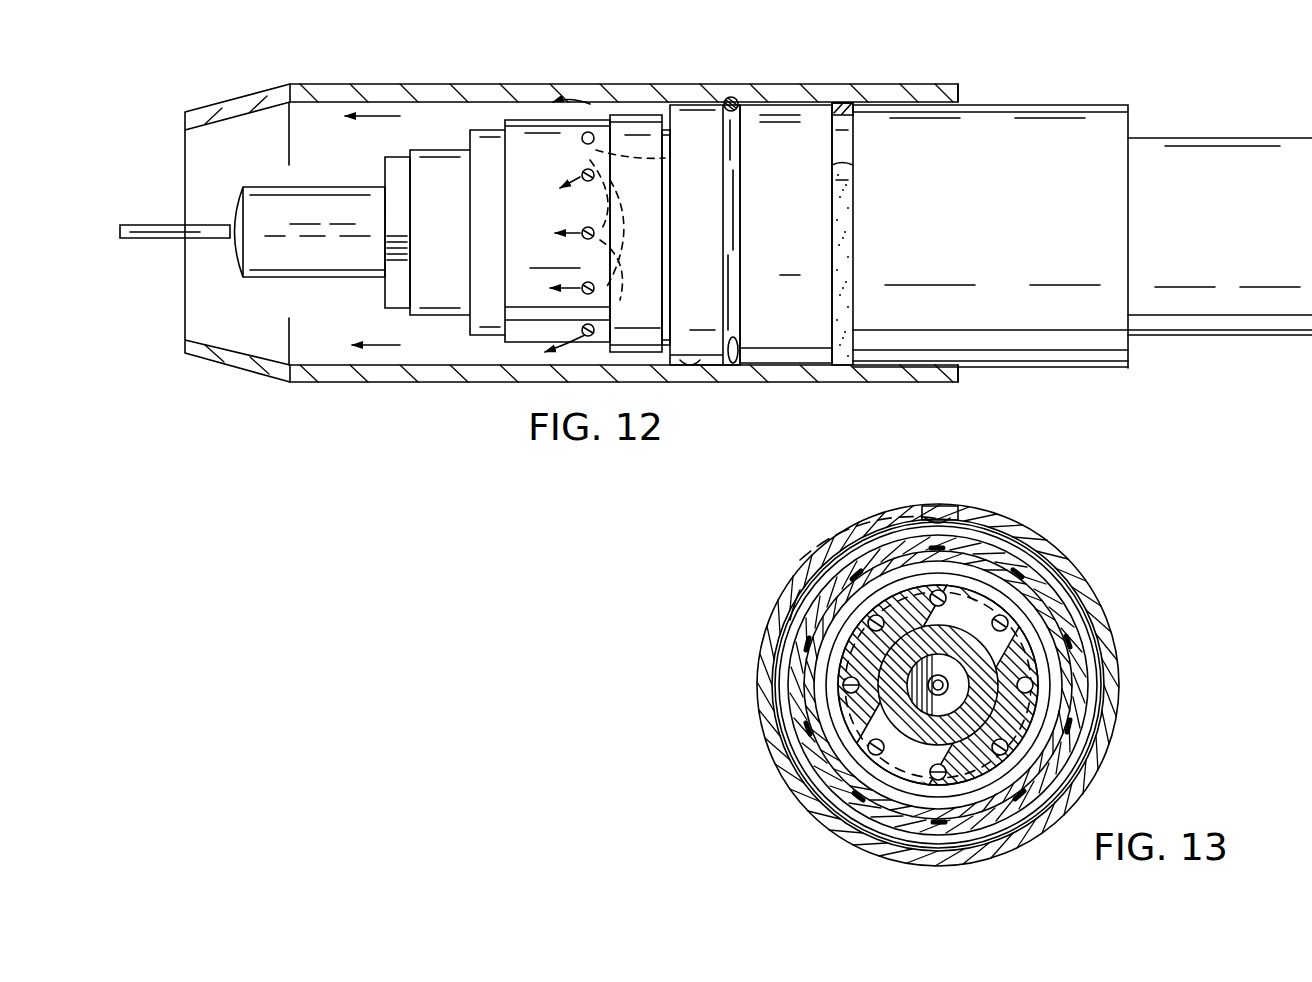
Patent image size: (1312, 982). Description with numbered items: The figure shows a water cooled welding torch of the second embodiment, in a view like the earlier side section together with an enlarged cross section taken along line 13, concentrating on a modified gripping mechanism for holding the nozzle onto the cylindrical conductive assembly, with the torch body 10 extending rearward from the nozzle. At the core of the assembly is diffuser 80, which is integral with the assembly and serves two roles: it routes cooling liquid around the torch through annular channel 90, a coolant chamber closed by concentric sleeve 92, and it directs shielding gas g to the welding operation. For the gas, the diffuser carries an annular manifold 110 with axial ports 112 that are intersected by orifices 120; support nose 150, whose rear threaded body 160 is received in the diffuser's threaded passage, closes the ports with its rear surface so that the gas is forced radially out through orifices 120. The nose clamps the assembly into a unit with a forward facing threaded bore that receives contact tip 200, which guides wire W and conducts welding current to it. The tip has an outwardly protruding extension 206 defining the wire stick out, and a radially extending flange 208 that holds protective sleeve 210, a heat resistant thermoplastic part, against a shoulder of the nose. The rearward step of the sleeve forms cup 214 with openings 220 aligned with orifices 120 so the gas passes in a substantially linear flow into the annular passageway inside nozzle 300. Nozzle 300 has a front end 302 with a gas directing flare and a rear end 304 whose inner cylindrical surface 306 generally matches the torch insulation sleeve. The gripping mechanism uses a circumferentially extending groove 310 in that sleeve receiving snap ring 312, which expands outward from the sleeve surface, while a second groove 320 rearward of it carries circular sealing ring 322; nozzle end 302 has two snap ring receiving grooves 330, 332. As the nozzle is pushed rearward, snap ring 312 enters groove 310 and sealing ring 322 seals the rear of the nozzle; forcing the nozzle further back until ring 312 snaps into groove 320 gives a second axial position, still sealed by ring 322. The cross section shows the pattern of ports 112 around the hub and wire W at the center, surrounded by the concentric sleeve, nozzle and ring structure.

In FIG. 12, the supply tube 10 is at (1252, 136).
In FIG. 13, the diffuser 80 is at (985, 600).
In FIG. 13, the annular channel 90 is at (1050, 730).
In FIG. 13, the concentric sleeve 92 is at (1062, 705).
In FIG. 13, the annular manifold 110 is at (860, 652).
In FIG. 13, the axial ports 112 is at (848, 688).
In FIG. 12, the orifices 120 is at (660, 158).
In FIG. 13, the support nose 150 is at (878, 700).
In FIG. 13, the rear threaded body 160 is at (905, 615).
In FIG. 12, the contact tip 200 is at (283, 282).
In FIG. 12, the extension 206 is at (318, 280).
In FIG. 12, the radially extending flange 208 is at (398, 163).
In FIG. 12, the protective sleeve 210 is at (500, 348).
In FIG. 12, the cup 214 is at (637, 113).
In FIG. 12, the openings 220 is at (590, 133).
In FIG. 12, the nozzle 300 is at (506, 88).
In FIG. 13, the nozzle 300 is at (1112, 645).
In FIG. 12, the front end 302 is at (218, 367).
In FIG. 12, the rear end 304 is at (958, 87).
In FIG. 12, the inner cylindrical surface 306 is at (903, 365).
In FIG. 13, the inner cylindrical surface 306 is at (930, 518).
In FIG. 12, the groove 310 is at (745, 117).
In FIG. 13, the groove 310 is at (1062, 612).
In FIG. 12, the snap ring 312 is at (728, 100).
In FIG. 13, the snap ring 312 is at (1095, 680).
In FIG. 12, the second groove 320 is at (848, 150).
In FIG. 12, the sealing ring 322 is at (845, 104).
In FIG. 12, the snap ring receiving groove 330 is at (738, 358).
In FIG. 13, the snap ring receiving groove 330 is at (790, 622).
In FIG. 12, the snap ring receiving groove 332 is at (690, 362).
In FIG. 12, the section line 13 is at (733, 62).
In FIG. 12, the shielding gas g is at (130, 142).
In FIG. 12, the wire W is at (155, 232).
In FIG. 13, the wire W is at (935, 690).